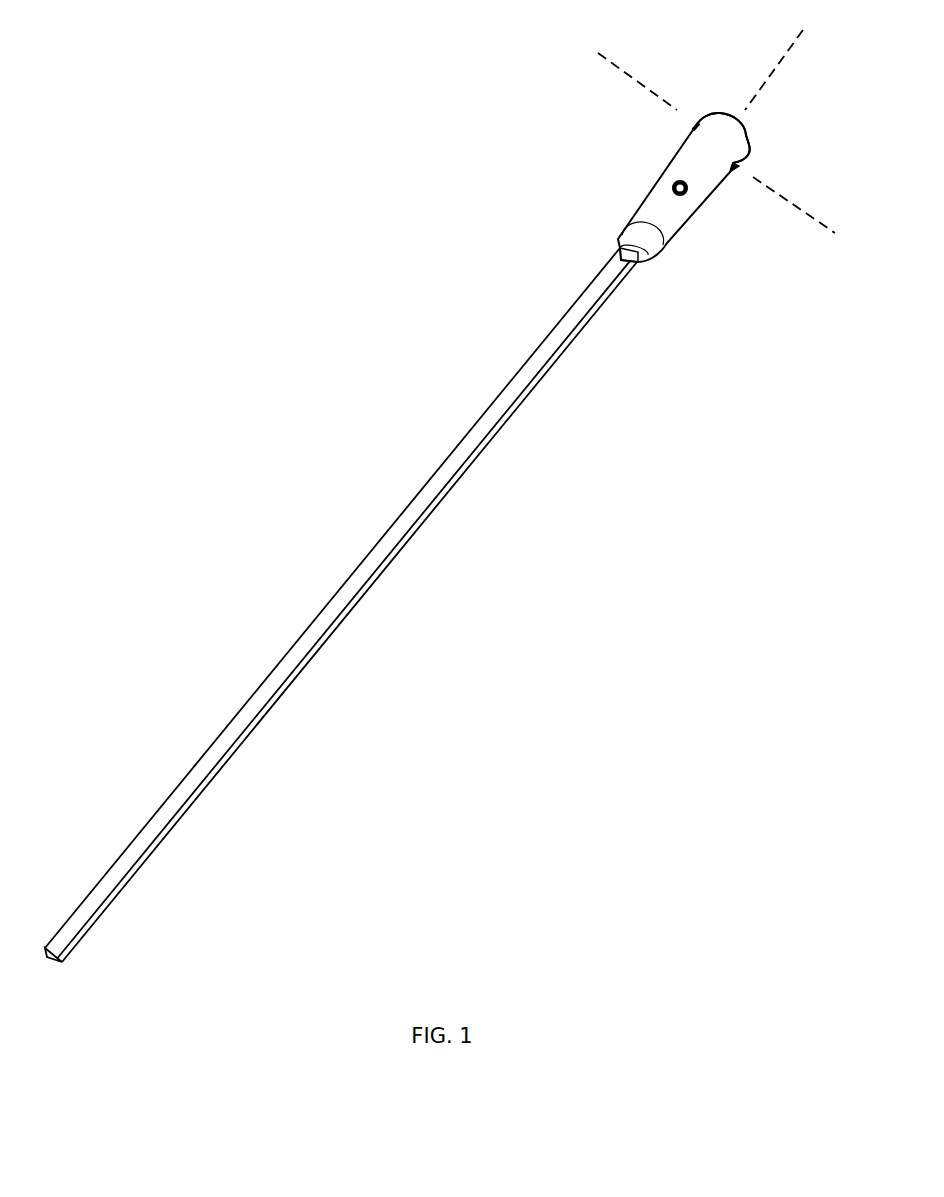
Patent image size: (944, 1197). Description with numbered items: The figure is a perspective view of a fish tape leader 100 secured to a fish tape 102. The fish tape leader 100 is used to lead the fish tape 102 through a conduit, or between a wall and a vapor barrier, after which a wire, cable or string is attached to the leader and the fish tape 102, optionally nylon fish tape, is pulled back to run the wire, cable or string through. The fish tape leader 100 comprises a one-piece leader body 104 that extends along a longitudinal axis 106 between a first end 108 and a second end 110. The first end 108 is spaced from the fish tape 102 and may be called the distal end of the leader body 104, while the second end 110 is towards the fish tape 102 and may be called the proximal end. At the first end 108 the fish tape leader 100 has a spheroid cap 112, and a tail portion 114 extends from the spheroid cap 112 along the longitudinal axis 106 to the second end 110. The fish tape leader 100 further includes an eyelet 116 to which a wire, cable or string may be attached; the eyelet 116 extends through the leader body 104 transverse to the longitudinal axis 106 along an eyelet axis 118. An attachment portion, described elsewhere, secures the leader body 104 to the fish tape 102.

The fish tape leader 100 is at (440, 496).
The fish tape 102 is at (477, 460).
The leader body 104 is at (720, 183).
The longitudinal axis 106 is at (783, 60).
The first end 108 is at (723, 113).
The second end 110 is at (618, 255).
The spheroid cap 112 is at (737, 133).
The tail portion 114 is at (668, 220).
The eyelet 116 is at (738, 165).
The eyelet axis 118 is at (818, 225).